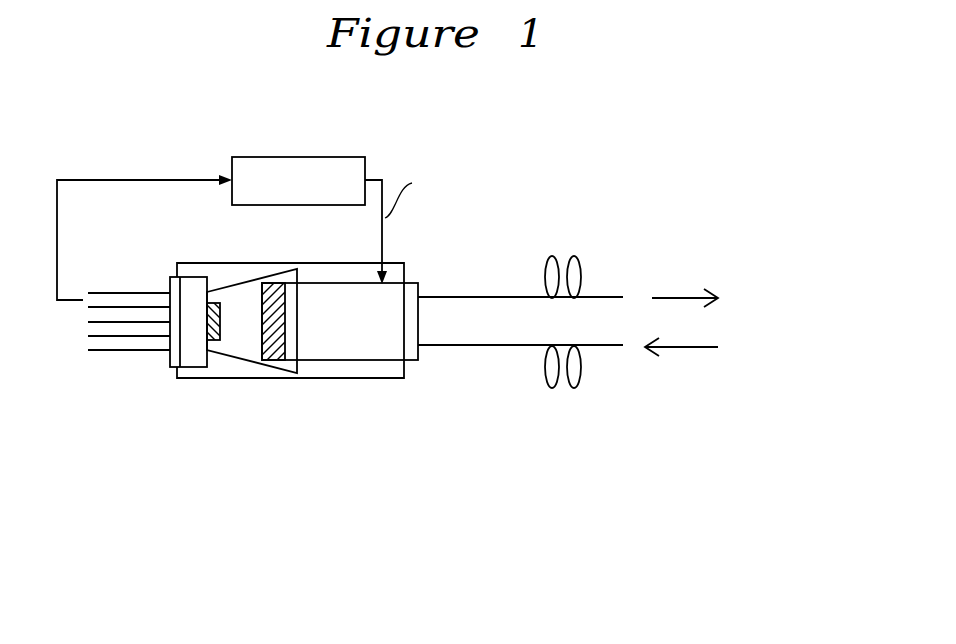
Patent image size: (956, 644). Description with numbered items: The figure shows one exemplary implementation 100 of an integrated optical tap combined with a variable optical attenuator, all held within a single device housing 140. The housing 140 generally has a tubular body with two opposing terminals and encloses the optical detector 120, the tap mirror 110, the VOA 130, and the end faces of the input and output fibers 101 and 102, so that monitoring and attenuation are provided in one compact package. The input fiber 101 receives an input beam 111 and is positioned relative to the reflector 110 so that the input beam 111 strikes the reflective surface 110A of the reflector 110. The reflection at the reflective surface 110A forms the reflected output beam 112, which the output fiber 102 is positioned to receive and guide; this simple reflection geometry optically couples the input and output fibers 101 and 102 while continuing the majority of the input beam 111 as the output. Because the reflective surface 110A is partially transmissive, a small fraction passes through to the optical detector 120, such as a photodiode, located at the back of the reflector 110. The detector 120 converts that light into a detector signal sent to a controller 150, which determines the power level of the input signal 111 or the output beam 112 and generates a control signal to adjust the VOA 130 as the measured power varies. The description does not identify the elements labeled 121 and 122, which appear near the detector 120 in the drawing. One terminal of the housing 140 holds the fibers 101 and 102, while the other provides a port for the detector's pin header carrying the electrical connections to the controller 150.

The integrated optical tap device 100 is at (615, 121).
The input fiber 101 is at (435, 350).
The output fiber 102 is at (437, 293).
The tap mirror 110 is at (277, 277).
The reflective surface 110A is at (287, 322).
The input beam 111 is at (681, 333).
The reflected output beam 112 is at (685, 284).
The optical detector 120 is at (220, 347).
The pin header 121 is at (192, 373).
The detector signal wires 122 is at (140, 357).
The variable optical attenuator 130 is at (418, 362).
The device housing 140 is at (177, 387).
The controller 150 is at (283, 211).